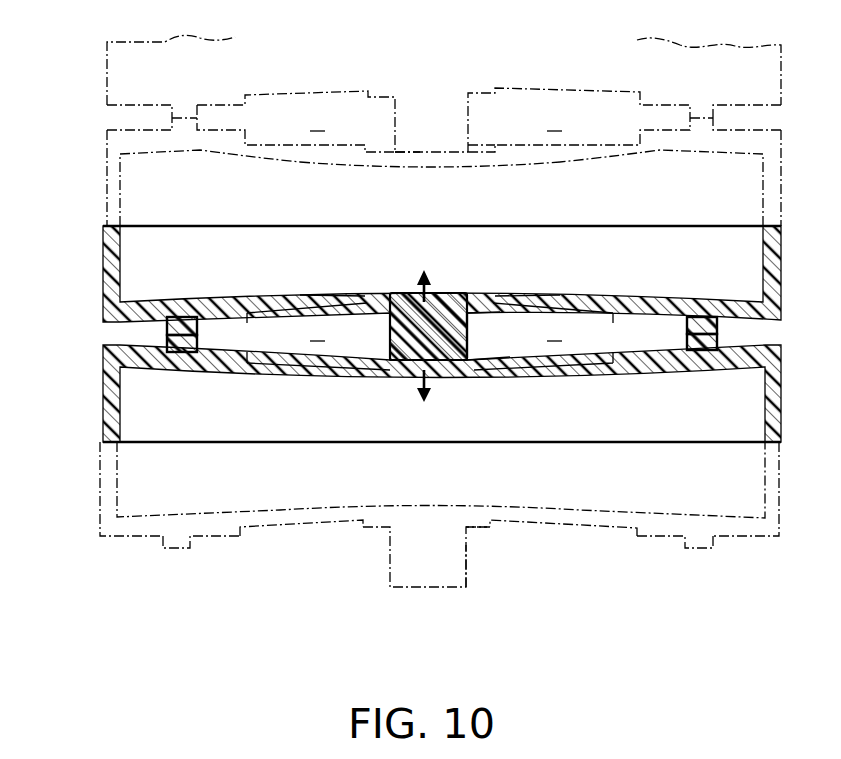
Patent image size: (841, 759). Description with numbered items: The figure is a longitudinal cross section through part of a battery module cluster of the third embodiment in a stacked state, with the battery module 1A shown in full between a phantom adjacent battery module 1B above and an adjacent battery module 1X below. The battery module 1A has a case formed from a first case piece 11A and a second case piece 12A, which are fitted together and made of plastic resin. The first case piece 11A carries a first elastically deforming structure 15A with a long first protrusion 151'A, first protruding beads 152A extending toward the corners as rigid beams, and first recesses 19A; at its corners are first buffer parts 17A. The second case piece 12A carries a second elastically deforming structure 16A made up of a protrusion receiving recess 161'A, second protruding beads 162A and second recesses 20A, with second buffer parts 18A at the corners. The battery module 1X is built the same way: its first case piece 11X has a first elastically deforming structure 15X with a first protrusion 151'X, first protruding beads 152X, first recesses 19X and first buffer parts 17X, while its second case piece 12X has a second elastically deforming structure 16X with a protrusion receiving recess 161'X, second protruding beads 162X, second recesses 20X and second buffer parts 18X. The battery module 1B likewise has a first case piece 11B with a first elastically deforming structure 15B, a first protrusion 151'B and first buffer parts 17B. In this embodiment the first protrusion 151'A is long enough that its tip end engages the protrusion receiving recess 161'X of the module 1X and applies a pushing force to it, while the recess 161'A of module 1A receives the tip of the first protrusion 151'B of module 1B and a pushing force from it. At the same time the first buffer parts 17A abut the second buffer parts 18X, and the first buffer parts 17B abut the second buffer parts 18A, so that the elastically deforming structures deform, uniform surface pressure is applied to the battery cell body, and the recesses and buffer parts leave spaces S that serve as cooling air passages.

The battery module 1B is at (423, 125).
The first case piece 11B is at (107, 70).
The first buffer part 17B is at (180, 107).
The second buffer part 18A is at (180, 125).
The second case piece 12A is at (406, 190).
The first elastically deforming structure 15B is at (443, 92).
The first protrusion 151'B is at (573, 92).
The battery module 1A is at (399, 252).
The first case piece 11A is at (415, 252).
The second elastically deforming structure 16A is at (381, 175).
The first recess 19A is at (284, 320).
The second recess 20A is at (334, 144).
The first elastically deforming structure 15A is at (455, 252).
The first protrusion 151'A is at (486, 305).
The first protruding bead 152A is at (497, 320).
The protrusion receiving recess 161'A is at (420, 178).
The second protruding bead 162A is at (485, 147).
The first buffer part 17A is at (717, 327).
The second buffer part 18X is at (717, 343).
The battery module 1X is at (399, 483).
The second case piece 12X is at (414, 394).
The second recess 20X is at (317, 360).
The protrusion receiving recess 161'X is at (454, 388).
The second protruding bead 162X is at (507, 366).
The second elastically deforming structure 16X is at (440, 396).
The first case piece 11X is at (412, 531).
The first buffer part 17X is at (178, 548).
The first recess 19X is at (313, 527).
The first elastically deforming structure 15X is at (427, 574).
The first protrusion 151'X is at (486, 583).
The first protruding bead 152X is at (487, 527).